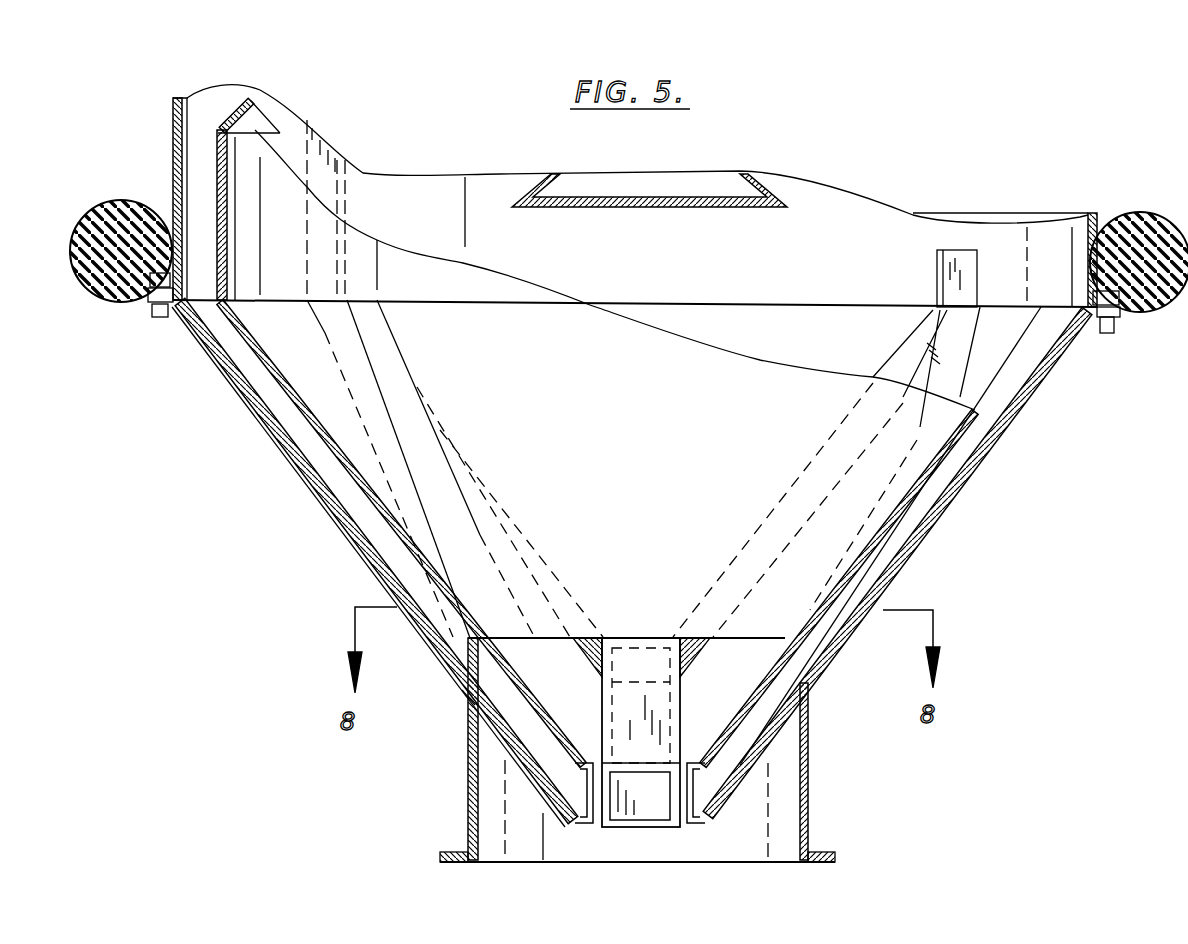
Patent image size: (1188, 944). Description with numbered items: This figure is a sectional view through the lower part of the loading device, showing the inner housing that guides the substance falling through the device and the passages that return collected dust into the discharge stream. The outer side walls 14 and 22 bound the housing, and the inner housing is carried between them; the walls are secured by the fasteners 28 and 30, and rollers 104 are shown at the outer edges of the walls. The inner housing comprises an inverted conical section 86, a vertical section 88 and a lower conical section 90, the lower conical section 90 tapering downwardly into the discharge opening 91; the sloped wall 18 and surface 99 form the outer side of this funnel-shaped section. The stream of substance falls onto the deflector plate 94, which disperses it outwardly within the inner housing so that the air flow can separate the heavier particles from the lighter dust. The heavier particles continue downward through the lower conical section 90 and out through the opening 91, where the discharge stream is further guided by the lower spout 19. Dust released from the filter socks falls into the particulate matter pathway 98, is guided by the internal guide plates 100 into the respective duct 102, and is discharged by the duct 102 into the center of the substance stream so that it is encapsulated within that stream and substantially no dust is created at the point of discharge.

The side wall 14 is at (172, 106).
The sloped hopper wall 18 is at (955, 485).
The lower spout 19 is at (813, 800).
The opposite side wall 22 is at (1155, 213).
The bolt fastener 28 is at (1120, 323).
The bolt fastener 30 is at (167, 323).
The inverted conical section 86 is at (235, 118).
The vertical section 88 is at (215, 163).
The lower conical section 90 is at (323, 443).
The discharge opening 91 is at (470, 695).
The deflector plate 94 is at (730, 207).
The particulate matter pathway 98 is at (350, 497).
The outer wall surface 99 is at (277, 403).
The internal guide plates 100 is at (730, 567).
The duct 102 is at (510, 747).
The roller 104 is at (110, 290).